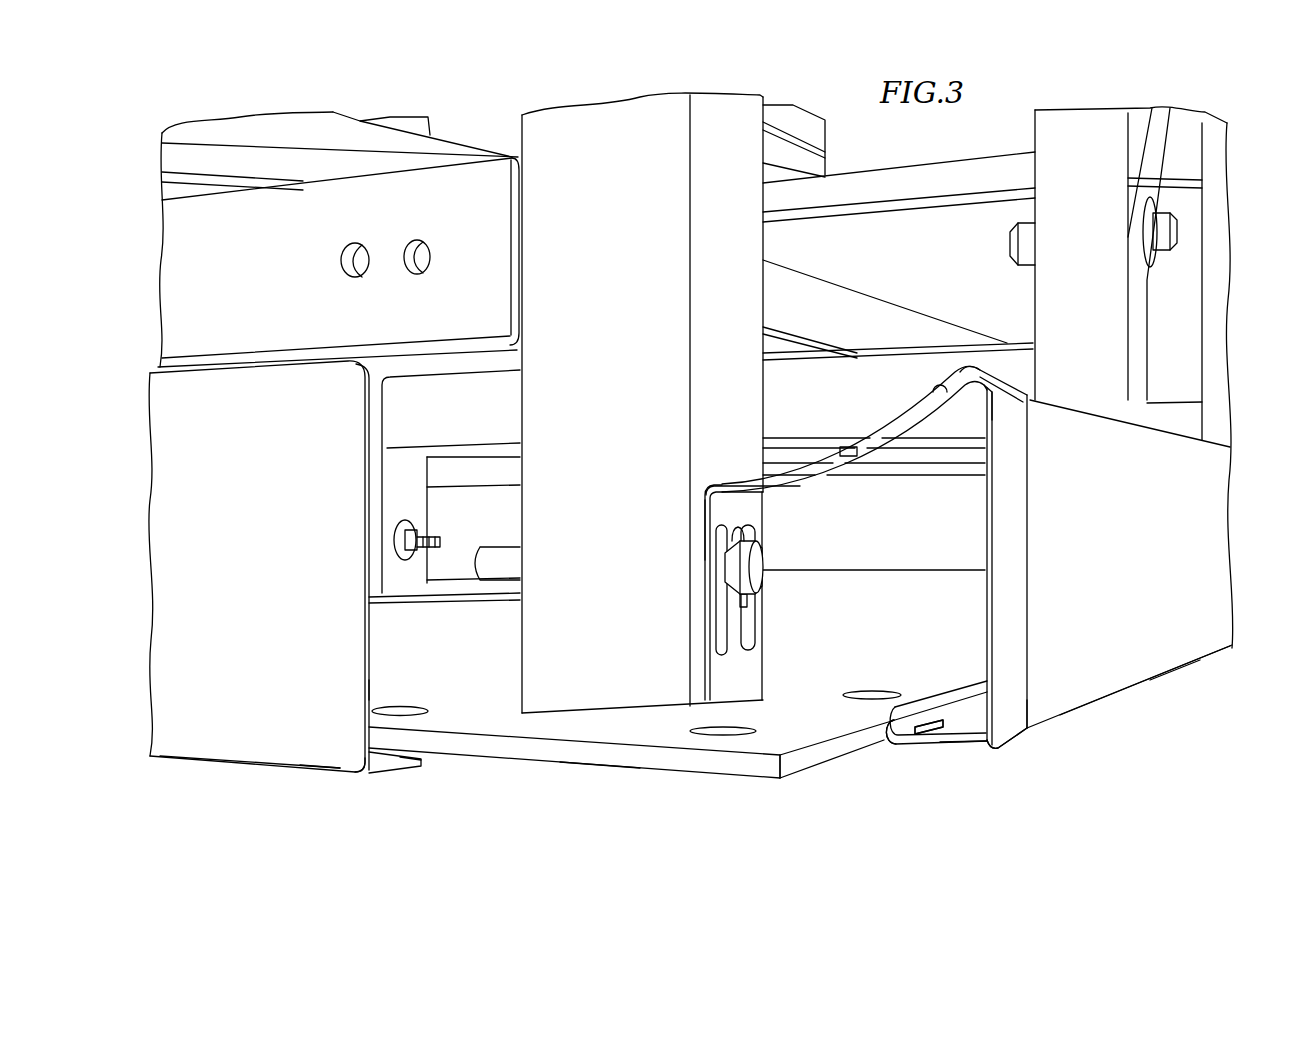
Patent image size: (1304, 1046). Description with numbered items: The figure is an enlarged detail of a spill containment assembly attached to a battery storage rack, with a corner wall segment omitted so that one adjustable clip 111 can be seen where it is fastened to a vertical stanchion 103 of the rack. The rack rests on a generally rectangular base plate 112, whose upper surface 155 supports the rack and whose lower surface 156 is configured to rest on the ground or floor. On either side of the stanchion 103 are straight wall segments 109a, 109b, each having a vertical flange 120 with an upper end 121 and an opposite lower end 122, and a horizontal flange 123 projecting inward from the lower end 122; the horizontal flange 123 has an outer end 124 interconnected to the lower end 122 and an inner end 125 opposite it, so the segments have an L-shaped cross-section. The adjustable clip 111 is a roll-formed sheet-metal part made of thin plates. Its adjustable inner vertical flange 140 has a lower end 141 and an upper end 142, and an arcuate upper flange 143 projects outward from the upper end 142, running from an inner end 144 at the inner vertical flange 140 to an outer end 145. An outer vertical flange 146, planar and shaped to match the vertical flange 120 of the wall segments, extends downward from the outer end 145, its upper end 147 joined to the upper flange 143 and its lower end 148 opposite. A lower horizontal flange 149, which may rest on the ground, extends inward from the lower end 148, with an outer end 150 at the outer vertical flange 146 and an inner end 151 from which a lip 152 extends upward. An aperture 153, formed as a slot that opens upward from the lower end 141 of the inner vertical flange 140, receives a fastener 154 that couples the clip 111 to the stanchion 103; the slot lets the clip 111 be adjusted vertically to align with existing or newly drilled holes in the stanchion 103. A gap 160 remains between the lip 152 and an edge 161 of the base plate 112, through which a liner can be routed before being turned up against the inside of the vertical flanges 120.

The stanchion 103 is at (703, 158).
The straight wall segment 109a is at (1190, 689).
The straight wall segment 109b is at (290, 784).
The adjustable clip 111 is at (1010, 754).
The base plate 112 is at (612, 731).
The vertical flange 120 is at (275, 713).
The upper end 121 is at (267, 353).
The lower end 122 is at (328, 770).
The horizontal flange 123 is at (390, 770).
The outer end 124 is at (370, 770).
The inner end 125 is at (423, 760).
The inner vertical flange 140 is at (745, 569).
The lower end 141 is at (760, 653).
The upper end 142 is at (713, 499).
The upper flange 143 is at (928, 423).
The inner end 144 is at (730, 484).
The outer end 145 is at (984, 372).
The outer vertical flange 146 is at (1008, 582).
The upper end 147 is at (1003, 380).
The lower end 148 is at (1003, 733).
The lower horizontal flange 149 is at (937, 750).
The outer end 150 is at (976, 752).
The inner end 151 is at (890, 742).
The lip 152 is at (893, 721).
The aperture 153 is at (745, 604).
The fastener 154 is at (753, 563).
The upper surface 155 is at (468, 668).
The lower surface 156 is at (588, 768).
The gap 160 is at (923, 706).
The edge 161 is at (805, 760).